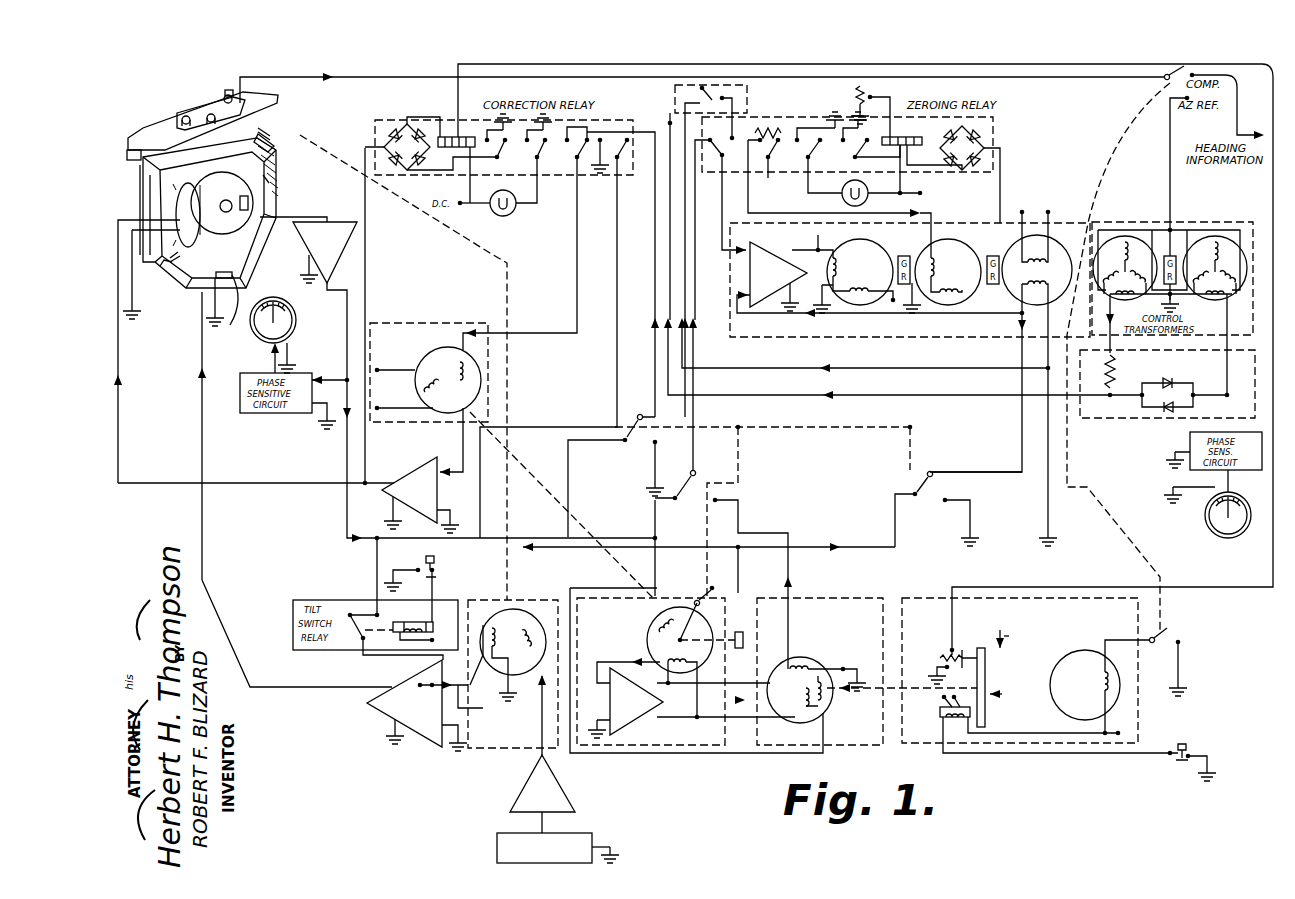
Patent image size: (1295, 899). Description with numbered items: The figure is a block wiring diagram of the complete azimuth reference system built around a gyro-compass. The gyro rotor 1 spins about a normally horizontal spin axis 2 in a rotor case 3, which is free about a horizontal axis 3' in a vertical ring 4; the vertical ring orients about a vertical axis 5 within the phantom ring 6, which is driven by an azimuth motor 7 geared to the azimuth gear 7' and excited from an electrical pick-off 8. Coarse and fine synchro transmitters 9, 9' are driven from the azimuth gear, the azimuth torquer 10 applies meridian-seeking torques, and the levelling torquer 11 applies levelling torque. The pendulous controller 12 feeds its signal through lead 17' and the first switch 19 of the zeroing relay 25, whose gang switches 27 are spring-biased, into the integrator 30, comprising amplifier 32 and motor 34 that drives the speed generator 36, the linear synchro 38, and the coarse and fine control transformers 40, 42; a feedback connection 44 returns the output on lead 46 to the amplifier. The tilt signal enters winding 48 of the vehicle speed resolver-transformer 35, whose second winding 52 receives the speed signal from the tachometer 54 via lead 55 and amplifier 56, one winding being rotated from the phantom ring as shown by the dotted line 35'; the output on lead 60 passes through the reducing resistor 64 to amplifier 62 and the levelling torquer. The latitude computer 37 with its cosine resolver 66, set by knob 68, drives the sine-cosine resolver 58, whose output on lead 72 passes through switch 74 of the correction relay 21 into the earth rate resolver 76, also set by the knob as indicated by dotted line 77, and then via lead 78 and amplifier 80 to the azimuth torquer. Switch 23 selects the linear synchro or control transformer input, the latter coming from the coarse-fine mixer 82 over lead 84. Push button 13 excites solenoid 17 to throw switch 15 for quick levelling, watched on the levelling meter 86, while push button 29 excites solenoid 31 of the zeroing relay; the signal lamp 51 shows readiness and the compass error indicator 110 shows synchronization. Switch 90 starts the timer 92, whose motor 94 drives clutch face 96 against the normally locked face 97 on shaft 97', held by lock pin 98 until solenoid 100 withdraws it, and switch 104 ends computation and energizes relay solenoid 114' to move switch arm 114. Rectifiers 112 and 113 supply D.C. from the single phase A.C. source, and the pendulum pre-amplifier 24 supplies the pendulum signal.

The gyro rotor 1 is at (268, 128).
The spin axis 2 is at (242, 240).
The rotor case 3 is at (230, 215).
The horizontal axis 3' is at (231, 238).
The vertical ring 4 is at (272, 132).
The vertical axis 5 is at (132, 158).
The phantom ring 6 is at (141, 178).
The azimuth motor 7 is at (166, 111).
The azimuth gear 7' is at (269, 123).
The electrical pick-off 8 is at (150, 196).
The coarse synchro transmitter 9 is at (212, 86).
The fine synchro transmitter 9' is at (220, 81).
The azimuth torquer 10 is at (165, 265).
The levelling torquer 11 is at (232, 309).
The pendulous controller 12 is at (250, 202).
The push button 13 is at (438, 558).
The switch 15 is at (364, 612).
The solenoid 17 is at (432, 611).
The lead 17' is at (383, 280).
The first switch 19 is at (722, 168).
The correction relay 21 is at (470, 118).
The switch 23 is at (747, 95).
The pendulum pre-amplifier 24 is at (340, 220).
The zeroing relay 25 is at (995, 135).
The gang switches 27 is at (805, 125).
The push button 29 is at (878, 92).
The integrator 30 is at (806, 338).
The solenoid 31 is at (908, 155).
The amplifier 32 is at (765, 303).
The motor 34 is at (892, 258).
The vehicle speed resolver-transformer 35 is at (337, 343).
The dotted line 35' is at (424, 367).
The speed generator 36 is at (993, 258).
The latitude computer 37 is at (610, 592).
The linear synchro 38 is at (1068, 255).
The coarse synchro control transformer 40 is at (1112, 240).
The fine synchro control transformer 42 is at (1248, 240).
The feedback connection 44 is at (958, 306).
The lead 46 is at (1015, 456).
The winding 48 is at (488, 660).
The signal lamp 51 is at (840, 205).
The second winding 52 is at (532, 648).
The tachometer 54 is at (588, 833).
The lead 55 is at (530, 827).
The amplifier 56 is at (568, 782).
The sine-cosine resolver 58 is at (830, 706).
The lead 60 is at (496, 704).
The amplifier 62 is at (435, 742).
The reducing resistor 64 is at (455, 700).
The cosine resolver 66 is at (714, 612).
The knob 68 is at (740, 650).
The lead 72 is at (742, 753).
The switch 74 is at (577, 165).
The earth rate resolver 76 is at (452, 323).
The dotted line 77 is at (540, 465).
The lead 78 is at (462, 438).
The amplifier 80 is at (412, 472).
The coarse-fine mixer 82 is at (1110, 418).
The lead 84 is at (900, 398).
The levelling meter 86 is at (297, 318).
The switch 90 is at (1195, 747).
The timer 92 is at (1072, 748).
The motor 94 is at (1085, 656).
The clutch face 96 is at (988, 672).
The clutch face 97 is at (959, 688).
The shaft 97' is at (922, 711).
The lock pin 98 is at (970, 735).
The solenoid 100 is at (945, 735).
The switch 104 is at (965, 642).
The compass error indicator 110 is at (1206, 528).
The rectifier 112 is at (958, 172).
The rectifier 113 is at (410, 170).
The switch arm 114 is at (624, 174).
The relay solenoid 114' is at (430, 116).